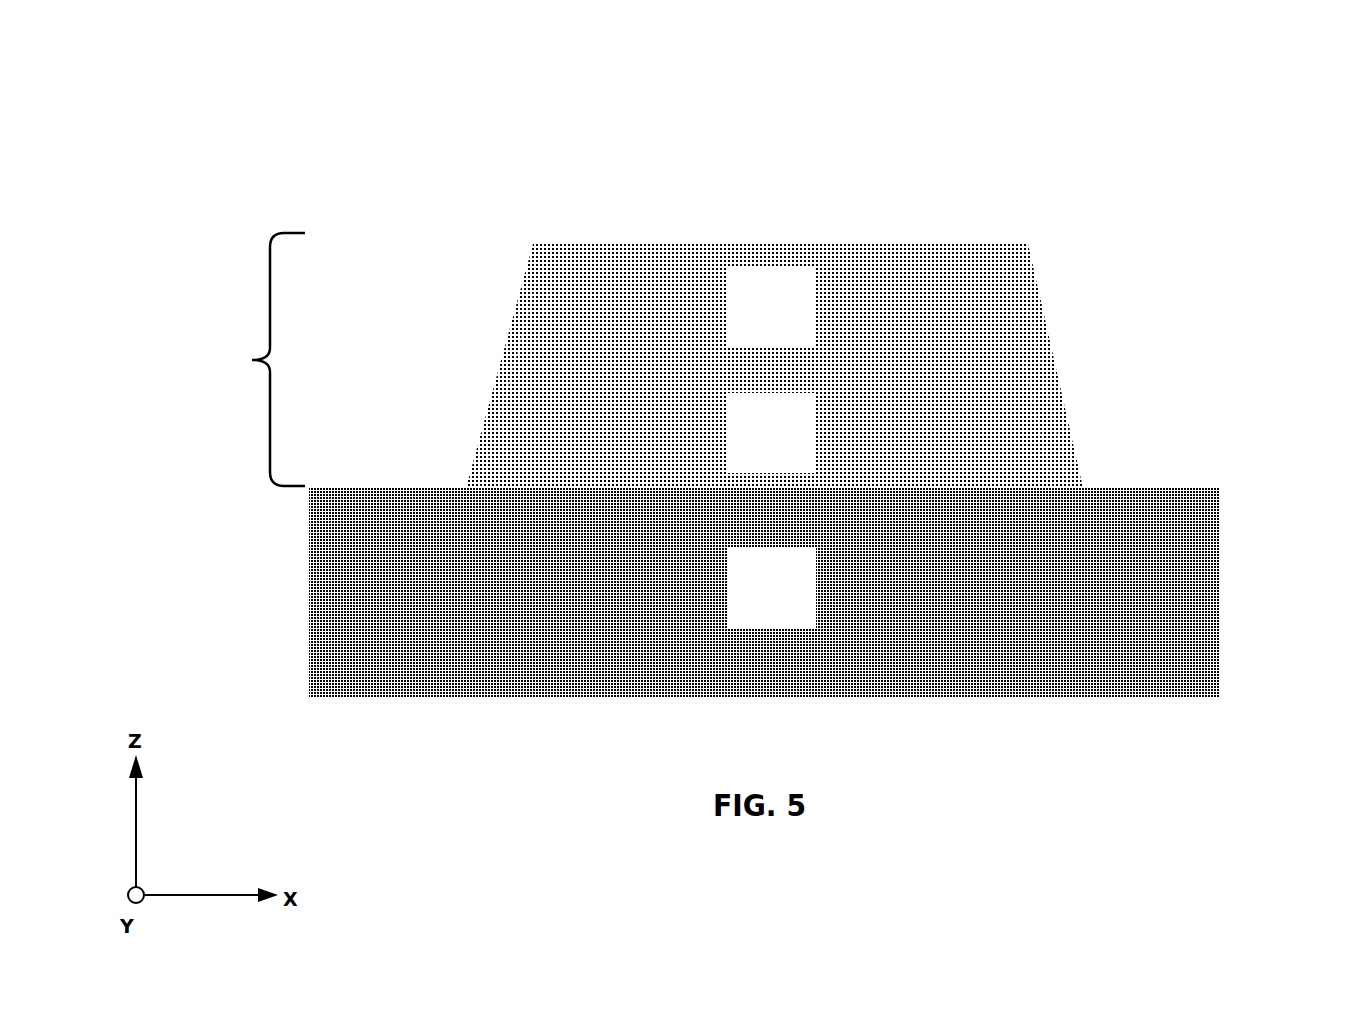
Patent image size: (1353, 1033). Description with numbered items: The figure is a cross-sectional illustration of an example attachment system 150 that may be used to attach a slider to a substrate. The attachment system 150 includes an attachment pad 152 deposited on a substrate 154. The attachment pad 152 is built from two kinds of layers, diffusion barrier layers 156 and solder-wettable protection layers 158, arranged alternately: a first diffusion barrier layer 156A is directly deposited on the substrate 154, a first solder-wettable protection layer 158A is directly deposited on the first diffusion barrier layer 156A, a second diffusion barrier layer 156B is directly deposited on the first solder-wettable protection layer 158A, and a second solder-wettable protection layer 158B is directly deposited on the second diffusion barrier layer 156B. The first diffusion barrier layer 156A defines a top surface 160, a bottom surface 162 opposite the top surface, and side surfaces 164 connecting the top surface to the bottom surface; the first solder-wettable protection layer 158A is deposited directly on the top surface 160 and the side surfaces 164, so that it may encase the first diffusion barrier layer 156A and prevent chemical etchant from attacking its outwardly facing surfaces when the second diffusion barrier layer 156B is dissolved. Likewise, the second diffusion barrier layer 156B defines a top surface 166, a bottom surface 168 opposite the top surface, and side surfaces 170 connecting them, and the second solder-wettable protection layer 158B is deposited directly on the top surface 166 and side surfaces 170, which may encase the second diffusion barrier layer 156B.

The attachment system 150 is at (212, 86).
The attachment pad 152 is at (256, 359).
The substrate 154 is at (784, 596).
The diffusion barrier layers 156 is at (549, 426).
The first diffusion barrier layer 156A is at (774, 429).
The second diffusion barrier layer 156B is at (778, 308).
The solder-wettable protection layers 158 is at (985, 334).
The first solder-wettable protection layer 158A is at (1000, 427).
The second solder-wettable protection layer 158B is at (1028, 378).
The top surface 160 is at (605, 365).
The bottom surface 162 is at (998, 480).
The side surfaces 164 is at (527, 463).
The top surface 166 is at (658, 258).
The bottom surface 168 is at (825, 345).
The side surfaces 170 is at (545, 278).